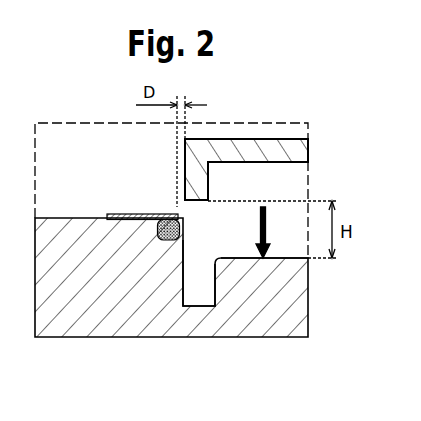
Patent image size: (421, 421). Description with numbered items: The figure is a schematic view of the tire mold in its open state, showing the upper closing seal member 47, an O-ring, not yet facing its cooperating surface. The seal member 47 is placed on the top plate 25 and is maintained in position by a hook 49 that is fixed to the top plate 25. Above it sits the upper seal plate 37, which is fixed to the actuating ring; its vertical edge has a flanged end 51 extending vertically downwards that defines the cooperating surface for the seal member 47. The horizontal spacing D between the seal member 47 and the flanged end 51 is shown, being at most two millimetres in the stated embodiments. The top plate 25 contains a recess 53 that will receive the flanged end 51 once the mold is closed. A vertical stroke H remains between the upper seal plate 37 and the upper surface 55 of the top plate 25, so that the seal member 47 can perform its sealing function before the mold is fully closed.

The top plate 25 is at (80, 282).
The upper seal plate 37 is at (275, 148).
The upper closing seal member 47 is at (167, 216).
The hook 49 is at (122, 213).
The flanged end 51 is at (195, 176).
The recess 53 is at (198, 288).
The upper surface 55 is at (280, 258).